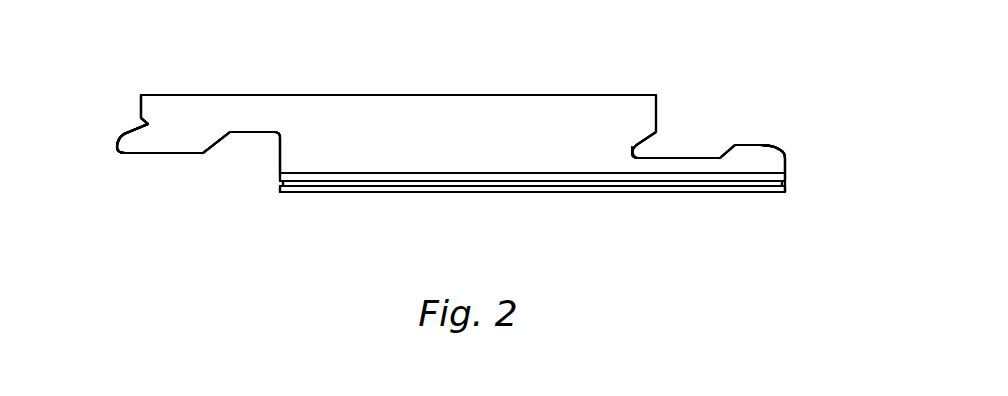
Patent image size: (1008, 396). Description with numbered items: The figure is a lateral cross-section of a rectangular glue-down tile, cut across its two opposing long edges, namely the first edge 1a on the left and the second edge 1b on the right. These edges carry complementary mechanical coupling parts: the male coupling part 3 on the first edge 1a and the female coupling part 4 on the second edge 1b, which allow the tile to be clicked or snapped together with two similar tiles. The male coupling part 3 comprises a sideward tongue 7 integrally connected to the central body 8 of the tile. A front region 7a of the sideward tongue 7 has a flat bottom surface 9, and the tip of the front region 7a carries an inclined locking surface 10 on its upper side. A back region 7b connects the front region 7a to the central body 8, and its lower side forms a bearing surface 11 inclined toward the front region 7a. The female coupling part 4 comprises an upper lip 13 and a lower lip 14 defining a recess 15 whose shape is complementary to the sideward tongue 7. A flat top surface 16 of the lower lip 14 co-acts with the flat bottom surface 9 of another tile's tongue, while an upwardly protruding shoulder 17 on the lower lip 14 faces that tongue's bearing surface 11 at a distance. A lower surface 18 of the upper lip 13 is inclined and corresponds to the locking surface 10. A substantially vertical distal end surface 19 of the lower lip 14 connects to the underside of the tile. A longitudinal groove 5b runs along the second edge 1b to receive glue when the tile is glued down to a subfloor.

The first edge 1a is at (122, 99).
The second edge 1b is at (802, 135).
The male coupling part 3 is at (181, 90).
The female coupling part 4 is at (732, 98).
The longitudinal groove 5b is at (785, 181).
The sideward tongue 7 is at (280, 240).
The front region 7a is at (160, 143).
The back region 7b is at (243, 125).
The central body 8 is at (448, 146).
The flat bottom surface 9 is at (140, 155).
The inclined locking surface 10 is at (142, 129).
The bearing surface 11 is at (250, 132).
The upper lip 13 is at (643, 117).
The lower lip 14 is at (700, 167).
The recess 15 is at (648, 147).
The top surface 16 is at (678, 158).
The upwardly protruding shoulder 17 is at (757, 147).
The lower surface 18 is at (643, 139).
The distal end surface 19 is at (790, 160).